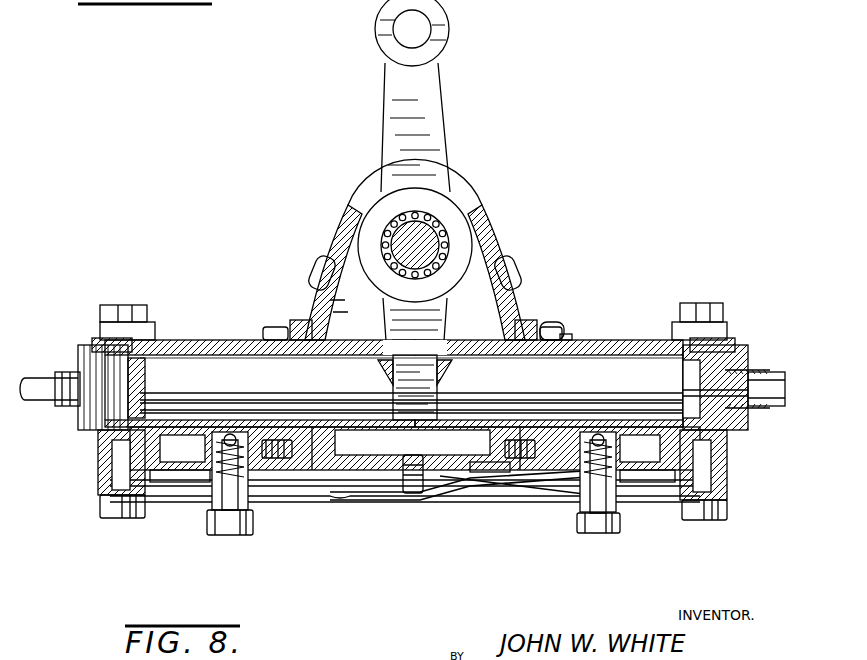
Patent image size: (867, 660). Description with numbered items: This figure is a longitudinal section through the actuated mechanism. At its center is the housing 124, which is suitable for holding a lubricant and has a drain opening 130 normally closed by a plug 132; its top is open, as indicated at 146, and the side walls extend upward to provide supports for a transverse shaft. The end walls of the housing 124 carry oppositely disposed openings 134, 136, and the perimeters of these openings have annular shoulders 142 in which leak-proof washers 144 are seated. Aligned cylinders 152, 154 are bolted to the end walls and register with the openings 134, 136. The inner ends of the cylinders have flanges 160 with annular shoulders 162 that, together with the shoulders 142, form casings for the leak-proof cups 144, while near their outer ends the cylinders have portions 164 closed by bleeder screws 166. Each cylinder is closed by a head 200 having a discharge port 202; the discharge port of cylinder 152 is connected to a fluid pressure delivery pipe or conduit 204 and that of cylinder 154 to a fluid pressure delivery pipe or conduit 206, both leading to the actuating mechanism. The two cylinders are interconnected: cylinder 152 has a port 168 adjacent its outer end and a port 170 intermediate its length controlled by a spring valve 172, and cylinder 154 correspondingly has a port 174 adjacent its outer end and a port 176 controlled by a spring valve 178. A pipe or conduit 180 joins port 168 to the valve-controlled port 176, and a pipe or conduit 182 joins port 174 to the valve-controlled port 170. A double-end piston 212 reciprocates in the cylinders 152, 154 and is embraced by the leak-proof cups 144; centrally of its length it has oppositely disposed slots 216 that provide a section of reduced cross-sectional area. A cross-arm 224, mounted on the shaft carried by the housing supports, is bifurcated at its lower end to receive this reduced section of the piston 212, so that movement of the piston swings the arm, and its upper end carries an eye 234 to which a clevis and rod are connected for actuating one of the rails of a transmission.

The housing 124 is at (345, 462).
The drain opening 130 is at (378, 505).
The plug 132 is at (410, 495).
The opening 134 is at (330, 318).
The opening 136 is at (500, 322).
The annular shoulder 142 is at (303, 328).
The leak-proof washer 144 is at (292, 336).
The open top 146 is at (340, 235).
The cylinder 152 is at (185, 338).
The cylinder 154 is at (640, 338).
The flange 160 is at (298, 470).
The annular shoulder 162 is at (532, 472).
The portion 164 is at (112, 342).
The bleeder screw 166 is at (112, 312).
The port 168 is at (100, 452).
The port 170 is at (195, 478).
The spring valve 172 is at (205, 490).
The port 174 is at (717, 455).
The port 176 is at (620, 488).
The spring valve 178 is at (610, 492).
The pipe or conduit 180 is at (515, 490).
The pipe or conduit 182 is at (445, 500).
The head 200 is at (82, 428).
The discharge port 202 is at (133, 388).
The fluid pressure delivery pipe or conduit 204 is at (35, 386).
The fluid pressure delivery pipe or conduit 206 is at (780, 398).
The double-end piston 212 is at (230, 366).
The slot 216 is at (425, 412).
The cross-arm 224 is at (440, 103).
The eye 234 is at (440, 33).